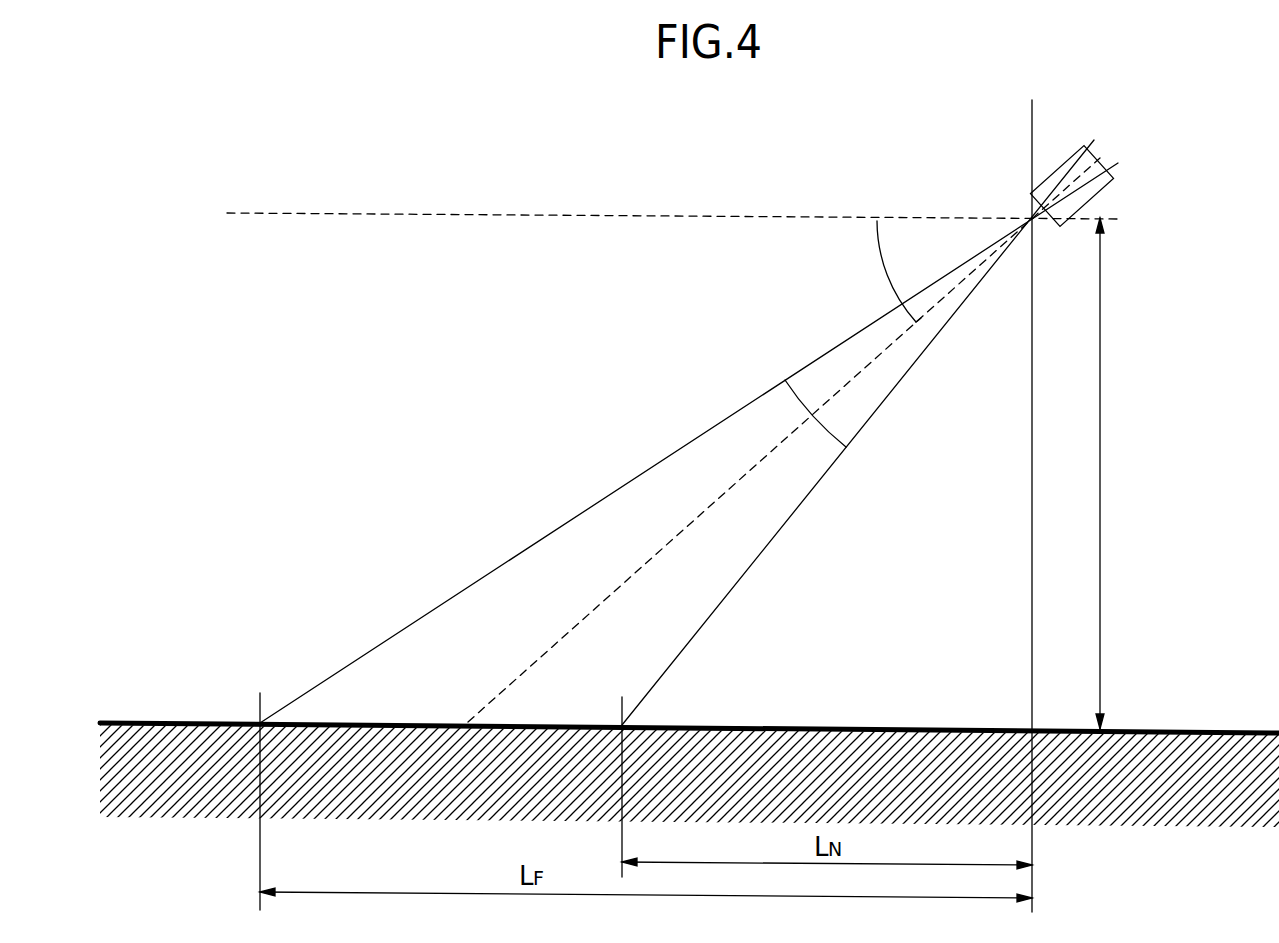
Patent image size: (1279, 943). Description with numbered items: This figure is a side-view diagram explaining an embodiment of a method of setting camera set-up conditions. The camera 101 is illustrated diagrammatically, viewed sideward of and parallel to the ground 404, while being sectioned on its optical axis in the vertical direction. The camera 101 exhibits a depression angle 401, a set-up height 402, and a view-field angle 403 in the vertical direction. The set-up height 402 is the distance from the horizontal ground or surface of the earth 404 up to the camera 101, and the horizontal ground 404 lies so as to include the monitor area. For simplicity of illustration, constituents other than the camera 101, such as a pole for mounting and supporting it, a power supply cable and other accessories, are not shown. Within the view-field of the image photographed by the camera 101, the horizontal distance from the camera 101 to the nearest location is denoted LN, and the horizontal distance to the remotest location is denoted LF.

The camera 101 is at (1095, 194).
The depression angle 401 is at (880, 268).
The set-up height 402 is at (1102, 470).
The view-field angle 403 is at (790, 405).
The horizontal ground 404 is at (1200, 731).